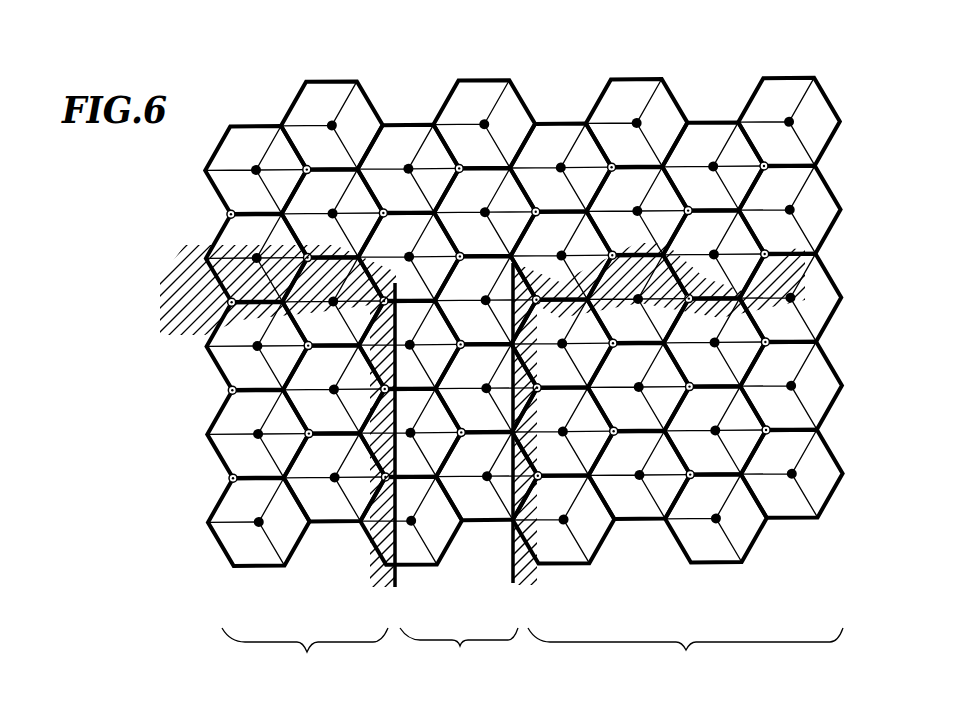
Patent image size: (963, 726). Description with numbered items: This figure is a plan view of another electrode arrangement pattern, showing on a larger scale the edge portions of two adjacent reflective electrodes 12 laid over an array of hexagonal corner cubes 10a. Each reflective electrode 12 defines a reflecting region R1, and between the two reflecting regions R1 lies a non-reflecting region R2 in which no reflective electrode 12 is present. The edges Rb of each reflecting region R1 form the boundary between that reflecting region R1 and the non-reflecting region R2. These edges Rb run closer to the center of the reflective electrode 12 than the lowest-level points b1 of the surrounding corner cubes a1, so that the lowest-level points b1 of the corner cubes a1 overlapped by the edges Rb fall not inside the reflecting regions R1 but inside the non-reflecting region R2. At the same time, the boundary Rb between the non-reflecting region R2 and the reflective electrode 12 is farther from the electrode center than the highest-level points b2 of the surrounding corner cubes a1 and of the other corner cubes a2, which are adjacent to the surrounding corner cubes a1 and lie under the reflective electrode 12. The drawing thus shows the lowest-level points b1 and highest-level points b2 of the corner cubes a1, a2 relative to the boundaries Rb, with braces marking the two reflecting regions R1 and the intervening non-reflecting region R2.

The hexagonal cell 10a is at (618, 80).
The surrounding corner cubes a1 is at (412, 317).
The other corner cubes a2 is at (317, 330).
The lowest-level points b1 is at (485, 488).
The highest-level points b2 is at (307, 252).
The reflective electrode 12 is at (745, 313).
The edge of reflecting region Rb is at (420, 437).
The reflecting region R1 is at (532, 661).
The non-reflecting region R2 is at (459, 656).